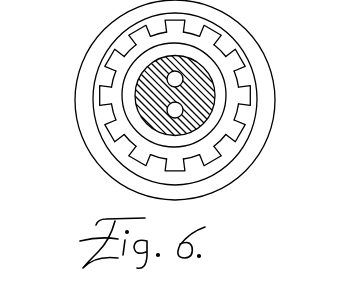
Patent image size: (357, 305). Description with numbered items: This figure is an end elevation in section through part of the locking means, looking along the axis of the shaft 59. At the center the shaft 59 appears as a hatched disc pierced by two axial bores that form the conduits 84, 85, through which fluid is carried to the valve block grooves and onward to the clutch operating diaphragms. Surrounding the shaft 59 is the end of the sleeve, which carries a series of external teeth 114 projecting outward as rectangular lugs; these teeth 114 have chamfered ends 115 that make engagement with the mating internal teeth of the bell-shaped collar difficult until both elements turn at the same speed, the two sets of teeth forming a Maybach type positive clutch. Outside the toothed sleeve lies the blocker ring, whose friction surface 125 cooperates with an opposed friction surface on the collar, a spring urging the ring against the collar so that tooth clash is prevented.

The friction surface 125 is at (244, 159).
The chamfered ends 115 is at (101, 93).
The external teeth 114 is at (132, 157).
The shaft 59 is at (216, 101).
The conduit 85 is at (183, 78).
The conduit 84 is at (167, 110).